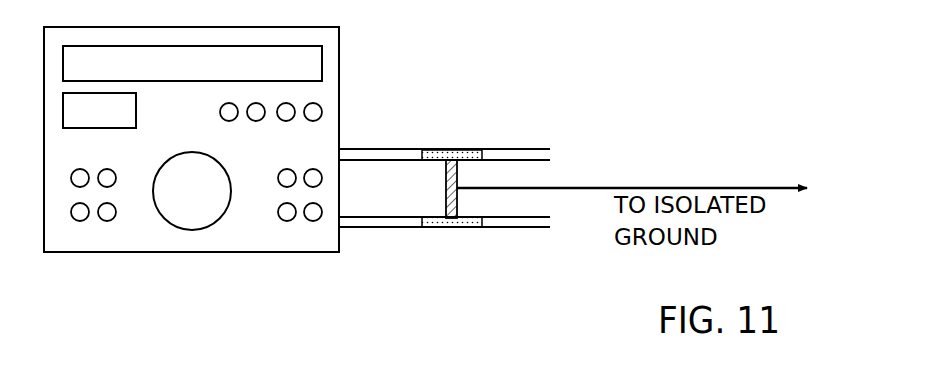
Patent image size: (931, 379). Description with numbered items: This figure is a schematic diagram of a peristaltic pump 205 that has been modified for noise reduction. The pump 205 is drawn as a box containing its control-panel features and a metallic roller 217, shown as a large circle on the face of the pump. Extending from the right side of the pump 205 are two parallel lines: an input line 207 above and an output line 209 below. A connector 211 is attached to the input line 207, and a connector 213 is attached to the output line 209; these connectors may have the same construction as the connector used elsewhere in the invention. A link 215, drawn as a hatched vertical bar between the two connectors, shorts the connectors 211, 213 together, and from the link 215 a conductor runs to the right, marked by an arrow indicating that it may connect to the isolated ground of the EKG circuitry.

The peristaltic pump 205 is at (341, 30).
The input line 207 is at (508, 148).
The output line 209 is at (510, 228).
The connector 211 is at (432, 148).
The connector 213 is at (432, 228).
The link 215 is at (446, 192).
The metallic roller 217 is at (172, 203).